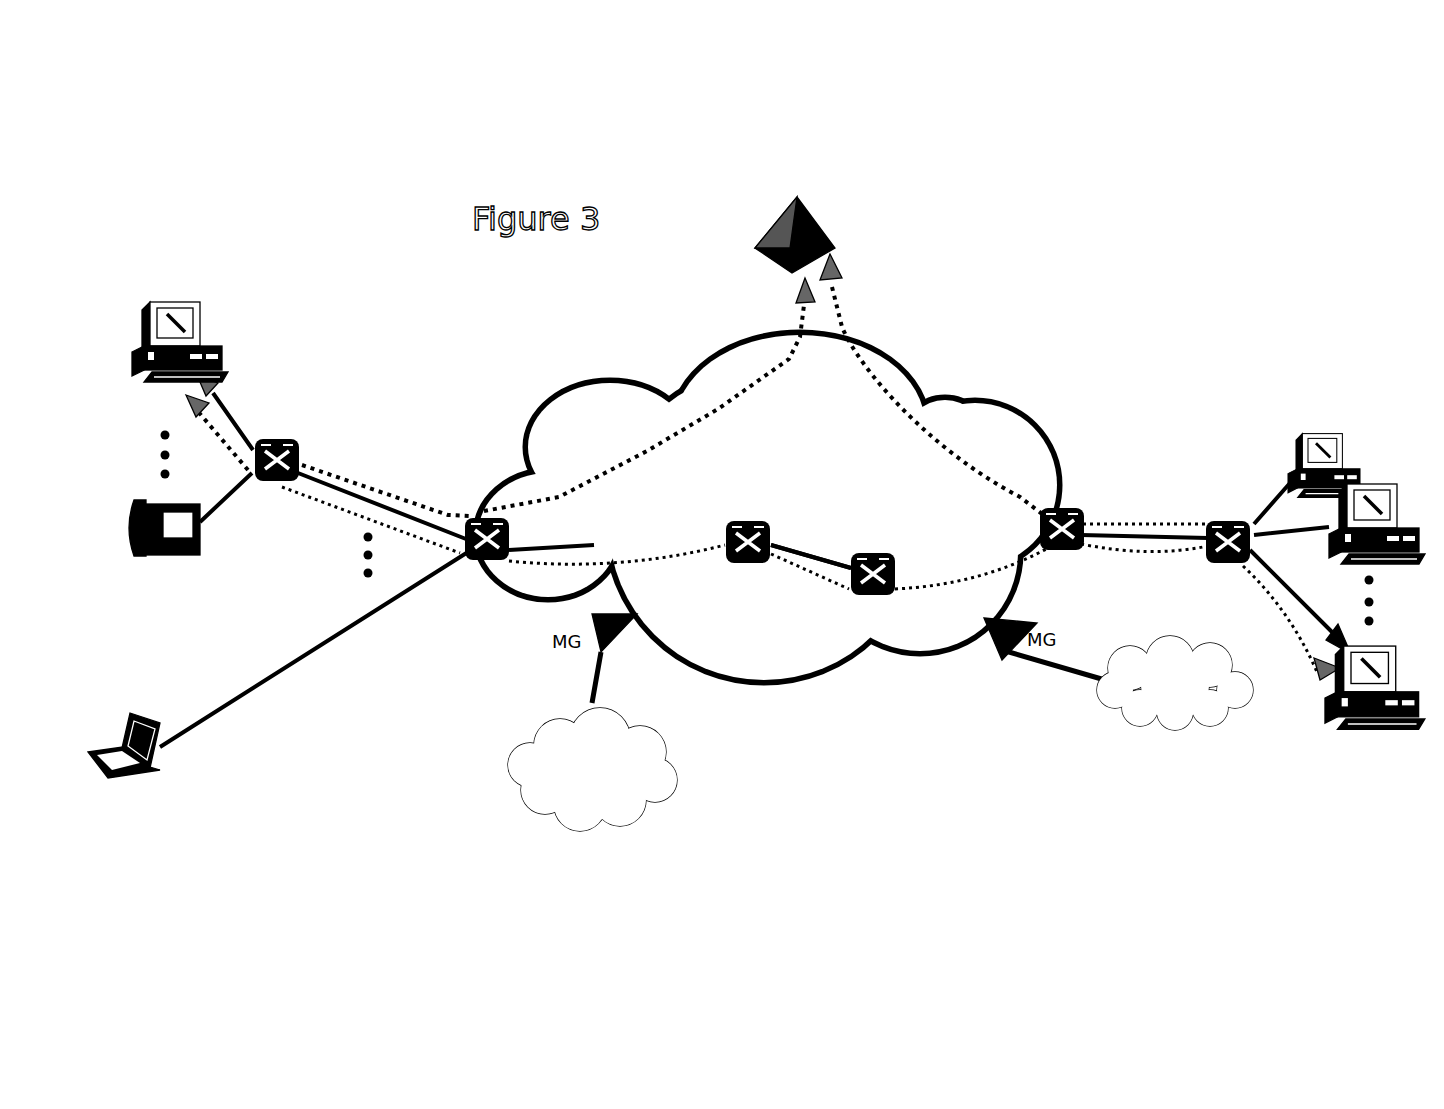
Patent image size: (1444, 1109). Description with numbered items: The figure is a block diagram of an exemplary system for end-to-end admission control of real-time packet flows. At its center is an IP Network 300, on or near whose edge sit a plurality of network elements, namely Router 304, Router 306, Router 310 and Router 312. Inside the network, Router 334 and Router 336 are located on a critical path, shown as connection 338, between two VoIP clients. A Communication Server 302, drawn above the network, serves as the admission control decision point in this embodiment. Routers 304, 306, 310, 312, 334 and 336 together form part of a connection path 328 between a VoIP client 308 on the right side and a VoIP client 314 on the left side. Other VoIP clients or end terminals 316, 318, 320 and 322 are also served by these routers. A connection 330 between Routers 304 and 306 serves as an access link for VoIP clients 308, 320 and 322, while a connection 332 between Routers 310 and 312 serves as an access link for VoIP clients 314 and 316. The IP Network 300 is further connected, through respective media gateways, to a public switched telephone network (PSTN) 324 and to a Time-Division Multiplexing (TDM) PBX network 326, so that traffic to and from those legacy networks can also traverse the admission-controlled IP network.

The IP Network 300 is at (767, 507).
The Communication Server 302 is at (817, 222).
The Router 304 is at (1072, 507).
The Router 306 is at (1239, 517).
The VoIP client 308 is at (1355, 717).
The Router 310 is at (497, 566).
The Router 312 is at (263, 437).
The VoIP client 314 is at (210, 312).
The VoIP client 316 is at (147, 557).
The VoIP client 318 is at (113, 773).
The VoIP client 320 is at (1403, 505).
The VoIP client 322 is at (1349, 455).
The public switched telephone network (PSTN) 324 is at (592, 769).
The Time-Division Multiplexing (TDM) PBX network 326 is at (1175, 683).
The connection path 328 is at (654, 554).
The connection 330 is at (1163, 522).
The connection 332 is at (426, 517).
The Router 334 is at (872, 598).
The Router 336 is at (740, 568).
The connection 338 is at (837, 556).